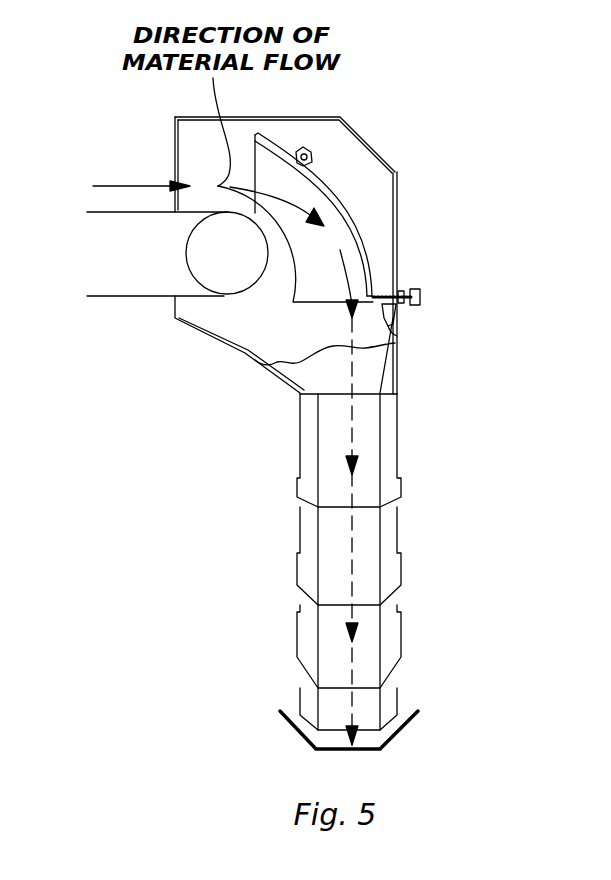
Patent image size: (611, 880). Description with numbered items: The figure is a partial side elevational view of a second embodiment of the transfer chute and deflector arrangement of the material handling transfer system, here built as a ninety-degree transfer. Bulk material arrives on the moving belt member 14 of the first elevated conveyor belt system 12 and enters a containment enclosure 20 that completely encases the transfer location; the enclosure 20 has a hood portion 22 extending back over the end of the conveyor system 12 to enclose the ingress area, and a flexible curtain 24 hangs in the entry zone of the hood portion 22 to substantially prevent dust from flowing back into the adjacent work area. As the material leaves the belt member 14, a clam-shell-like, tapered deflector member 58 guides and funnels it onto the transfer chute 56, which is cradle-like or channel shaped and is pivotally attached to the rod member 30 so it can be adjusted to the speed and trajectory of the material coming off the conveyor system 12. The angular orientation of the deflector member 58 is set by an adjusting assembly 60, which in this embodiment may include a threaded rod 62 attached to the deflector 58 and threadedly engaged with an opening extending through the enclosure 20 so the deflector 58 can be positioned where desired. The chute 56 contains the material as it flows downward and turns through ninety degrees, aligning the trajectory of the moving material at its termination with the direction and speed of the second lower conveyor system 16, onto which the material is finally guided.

The first elevated conveyor belt system 12 is at (215, 306).
The moving belt member 14 is at (132, 213).
The second lower belt conveyor system 16 is at (366, 755).
The enclosure 20 is at (296, 233).
The hood portion 22 is at (318, 116).
The flexible curtain 24 is at (175, 148).
The rod member 30 is at (308, 154).
The transfer chute 56 is at (287, 529).
The deflector member 58 is at (358, 200).
The adjusting assembly 60 is at (424, 284).
The threaded rod 62 is at (398, 322).